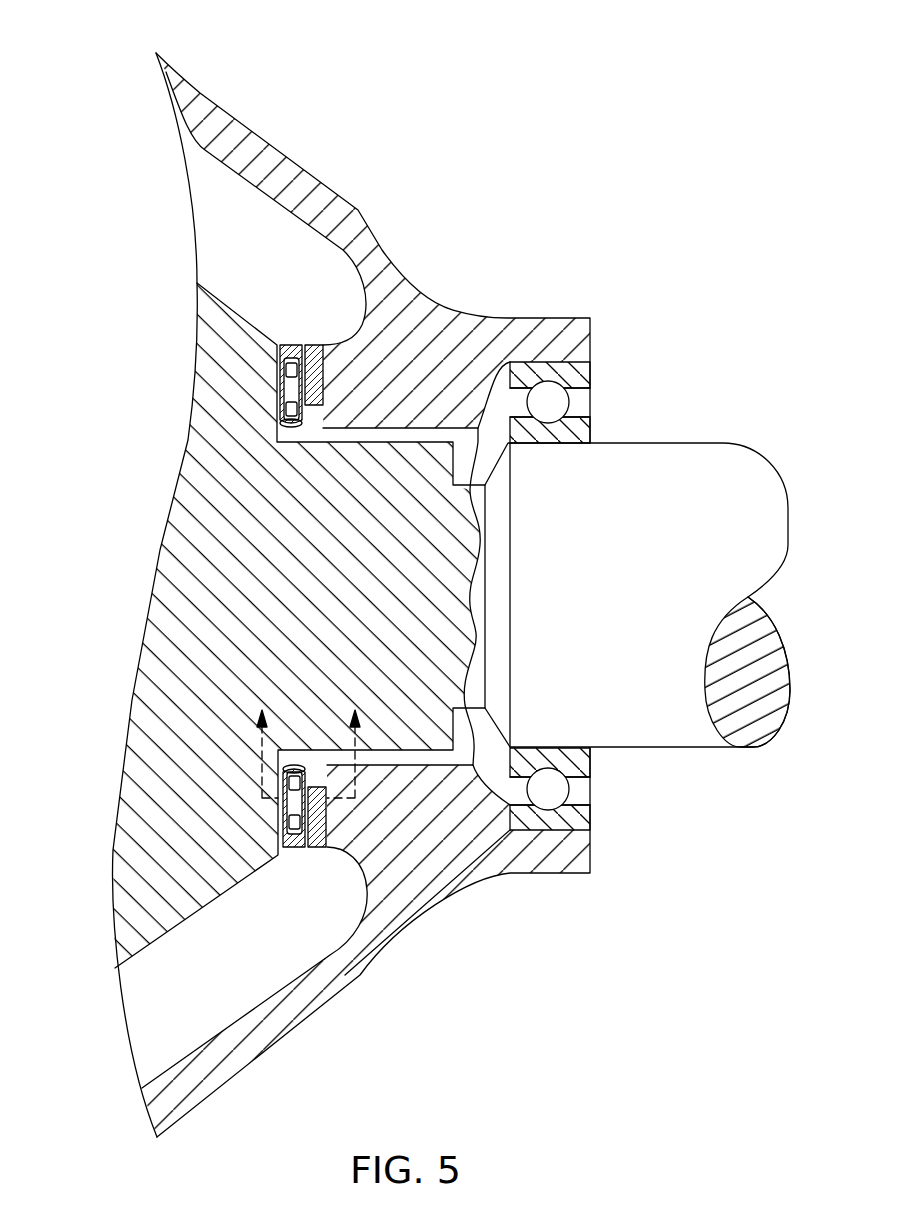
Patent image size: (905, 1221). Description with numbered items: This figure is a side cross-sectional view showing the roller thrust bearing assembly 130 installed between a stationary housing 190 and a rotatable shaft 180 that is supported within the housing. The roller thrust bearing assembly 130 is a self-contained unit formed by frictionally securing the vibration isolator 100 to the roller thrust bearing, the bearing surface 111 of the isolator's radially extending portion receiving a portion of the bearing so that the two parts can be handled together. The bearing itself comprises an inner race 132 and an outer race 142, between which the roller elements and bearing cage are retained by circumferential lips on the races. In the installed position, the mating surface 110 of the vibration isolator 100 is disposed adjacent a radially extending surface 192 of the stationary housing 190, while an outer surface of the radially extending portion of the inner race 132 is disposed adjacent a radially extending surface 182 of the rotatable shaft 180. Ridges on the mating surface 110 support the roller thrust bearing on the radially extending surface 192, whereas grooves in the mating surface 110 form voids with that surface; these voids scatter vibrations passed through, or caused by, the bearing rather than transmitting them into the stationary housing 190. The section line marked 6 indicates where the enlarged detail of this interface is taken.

The stationary housing 190 is at (190, 93).
The rotatable shaft 180 is at (640, 455).
The roller thrust bearing assembly 130 is at (299, 342).
The bearing surface 111 is at (312, 345).
The radially extending surface of rotatable shaft 182 is at (283, 396).
The radially extending surface of stationary housing 192 is at (318, 393).
The vibration isolator 100 is at (309, 850).
The mating surface 110 is at (358, 850).
The inner race 132 is at (280, 812).
The outer race 142 is at (327, 833).
The section line 6- 6 is at (308, 735).